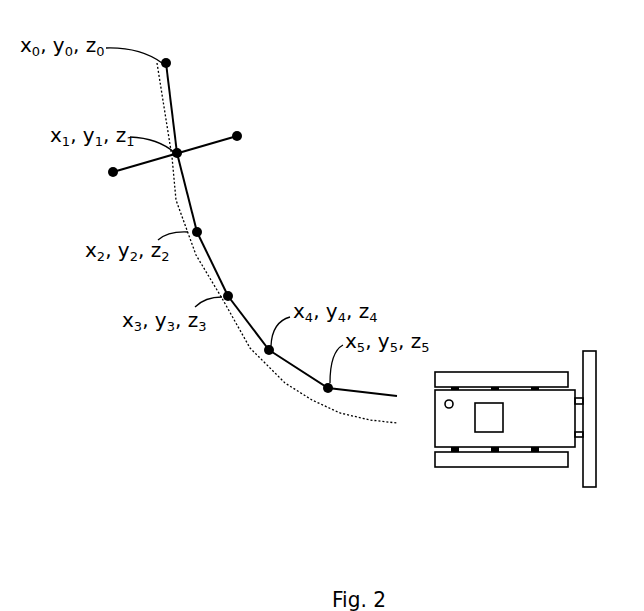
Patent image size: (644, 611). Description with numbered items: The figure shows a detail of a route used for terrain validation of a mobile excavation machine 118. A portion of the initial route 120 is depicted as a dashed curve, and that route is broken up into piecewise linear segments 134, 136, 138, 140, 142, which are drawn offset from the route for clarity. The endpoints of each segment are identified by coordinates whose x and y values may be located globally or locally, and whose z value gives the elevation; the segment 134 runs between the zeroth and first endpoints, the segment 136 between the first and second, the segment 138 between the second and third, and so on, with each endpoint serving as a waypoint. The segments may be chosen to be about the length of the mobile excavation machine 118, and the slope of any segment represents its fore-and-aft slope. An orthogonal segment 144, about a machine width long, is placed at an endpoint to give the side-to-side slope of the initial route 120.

The mobile excavation machine 118 is at (453, 467).
The initial route 120 is at (338, 415).
The piecewise linear segment 134 is at (172, 100).
The piecewise linear segment 136 is at (186, 197).
The piecewise linear segment 138 is at (212, 268).
The piecewise linear segment 140 is at (253, 335).
The piecewise linear segment 142 is at (293, 368).
The orthogonal segment 144 is at (145, 168).